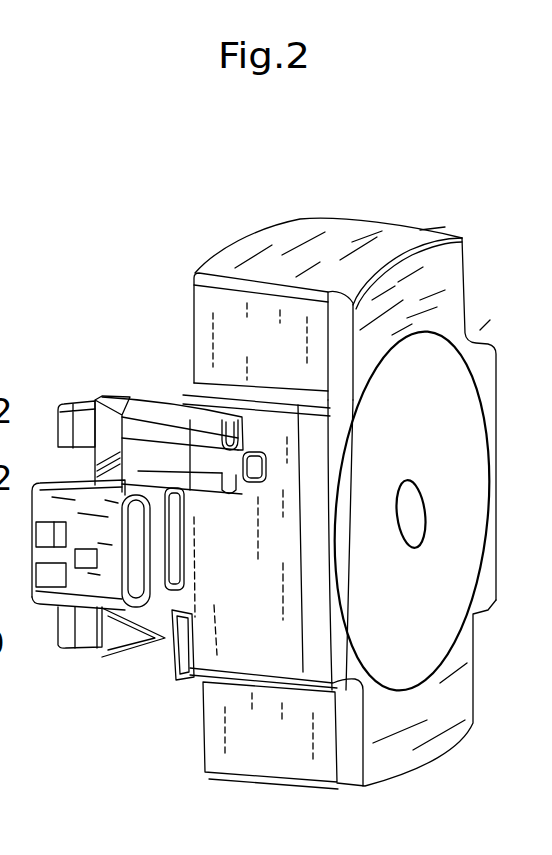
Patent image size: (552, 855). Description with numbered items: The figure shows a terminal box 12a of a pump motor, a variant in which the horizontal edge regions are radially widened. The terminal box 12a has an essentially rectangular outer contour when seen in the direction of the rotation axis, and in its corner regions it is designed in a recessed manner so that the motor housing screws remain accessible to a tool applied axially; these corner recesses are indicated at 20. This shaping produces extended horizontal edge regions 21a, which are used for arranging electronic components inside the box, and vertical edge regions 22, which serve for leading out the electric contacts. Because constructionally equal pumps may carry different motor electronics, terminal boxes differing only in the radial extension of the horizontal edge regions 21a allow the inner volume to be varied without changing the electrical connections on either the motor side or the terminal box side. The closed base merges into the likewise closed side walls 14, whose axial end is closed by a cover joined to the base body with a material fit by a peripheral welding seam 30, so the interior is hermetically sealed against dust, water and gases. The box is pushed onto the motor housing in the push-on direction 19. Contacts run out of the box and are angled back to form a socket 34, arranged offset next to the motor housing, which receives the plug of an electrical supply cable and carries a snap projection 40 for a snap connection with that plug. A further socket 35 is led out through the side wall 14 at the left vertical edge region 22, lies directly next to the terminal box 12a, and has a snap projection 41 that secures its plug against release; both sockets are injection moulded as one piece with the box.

The terminal box 12a is at (340, 224).
The peripheral welding seam 30 is at (391, 248).
The extended horizontal edge regions 21a is at (291, 360).
The side walls 14 is at (248, 563).
The vertical edge regions 22 is at (490, 355).
The socket 35 is at (178, 433).
The snap projection 41 is at (266, 468).
The snap projection 40 is at (78, 603).
The socket 34 is at (118, 578).
The push-on direction 19 is at (27, 357).
The corner recesses 20 is at (85, 357).